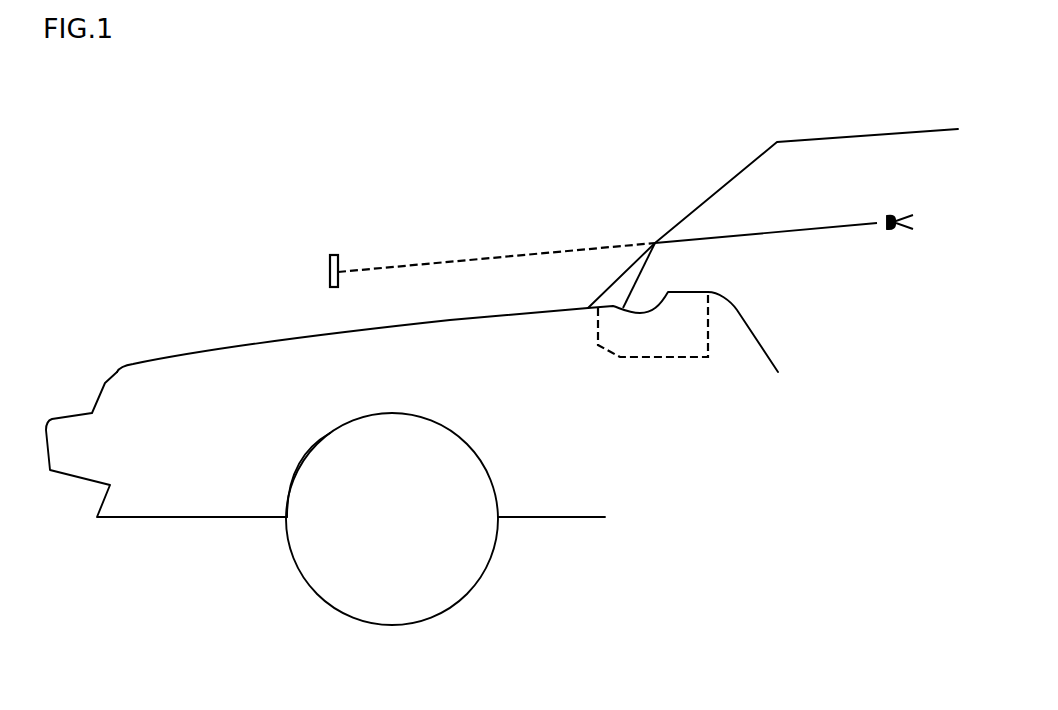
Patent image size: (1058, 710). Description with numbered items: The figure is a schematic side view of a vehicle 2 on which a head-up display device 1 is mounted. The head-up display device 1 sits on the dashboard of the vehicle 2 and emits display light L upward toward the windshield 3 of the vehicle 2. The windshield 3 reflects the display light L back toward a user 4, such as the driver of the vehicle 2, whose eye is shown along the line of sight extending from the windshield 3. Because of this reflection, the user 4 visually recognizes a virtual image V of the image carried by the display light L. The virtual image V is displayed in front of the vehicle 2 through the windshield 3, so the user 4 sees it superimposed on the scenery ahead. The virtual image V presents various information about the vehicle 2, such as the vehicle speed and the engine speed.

The head-up display device 1 is at (668, 358).
The vehicle 2 is at (677, 143).
The windshield 3 is at (683, 217).
The user 4 is at (897, 222).
The virtual image V is at (338, 255).
The display light L is at (669, 271).